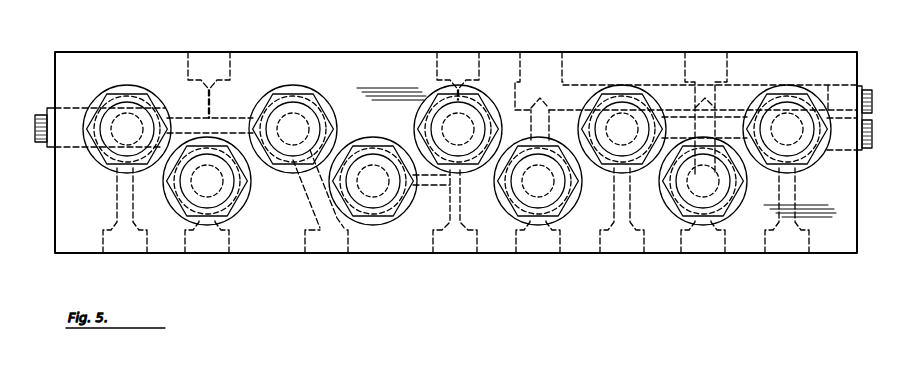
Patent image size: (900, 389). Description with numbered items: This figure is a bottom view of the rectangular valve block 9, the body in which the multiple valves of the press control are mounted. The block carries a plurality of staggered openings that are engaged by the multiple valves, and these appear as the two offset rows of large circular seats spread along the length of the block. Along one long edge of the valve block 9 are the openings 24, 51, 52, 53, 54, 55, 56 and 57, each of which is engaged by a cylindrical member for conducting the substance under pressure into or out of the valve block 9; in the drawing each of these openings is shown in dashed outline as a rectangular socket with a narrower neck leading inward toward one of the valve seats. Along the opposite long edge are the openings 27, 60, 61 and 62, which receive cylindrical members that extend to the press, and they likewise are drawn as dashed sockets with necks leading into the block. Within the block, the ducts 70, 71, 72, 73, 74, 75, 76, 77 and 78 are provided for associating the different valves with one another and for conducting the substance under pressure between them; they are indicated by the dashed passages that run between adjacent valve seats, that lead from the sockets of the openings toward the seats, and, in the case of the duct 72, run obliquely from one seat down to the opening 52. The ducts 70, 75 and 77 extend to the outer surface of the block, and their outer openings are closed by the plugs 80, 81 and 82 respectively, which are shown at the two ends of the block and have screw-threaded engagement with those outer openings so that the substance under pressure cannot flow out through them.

The valve block 9 is at (62, 252).
The opening 24 is at (126, 255).
The opening 27 is at (207, 58).
The opening 51 is at (216, 255).
The opening 52 is at (318, 255).
The opening 53 is at (452, 255).
The opening 54 is at (528, 255).
The opening 55 is at (610, 255).
The opening 56 is at (698, 255).
The opening 57 is at (782, 255).
The opening 60 is at (458, 62).
The opening 61 is at (544, 62).
The opening 62 is at (700, 62).
The duct 70 is at (181, 118).
The duct 71 is at (230, 122).
The duct 72 is at (314, 202).
The duct 73 is at (345, 210).
The duct 74 is at (436, 187).
The duct 75 is at (578, 104).
The duct 76 is at (672, 104).
The duct 77 is at (738, 114).
The duct 78 is at (531, 125).
The plug 80 is at (45, 143).
The plug 81 is at (866, 150).
The plug 82 is at (872, 101).